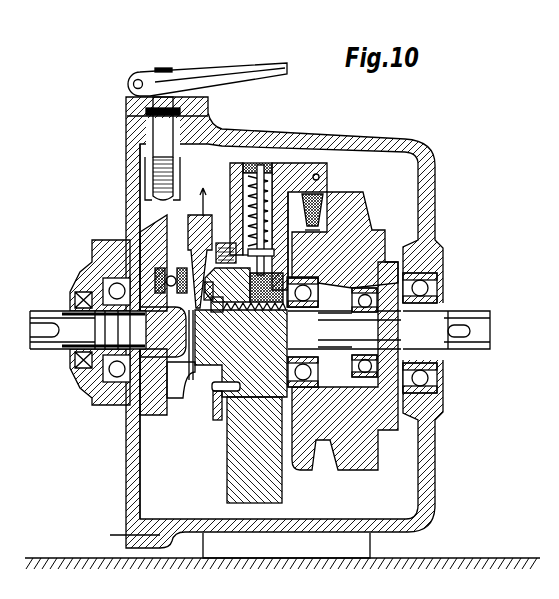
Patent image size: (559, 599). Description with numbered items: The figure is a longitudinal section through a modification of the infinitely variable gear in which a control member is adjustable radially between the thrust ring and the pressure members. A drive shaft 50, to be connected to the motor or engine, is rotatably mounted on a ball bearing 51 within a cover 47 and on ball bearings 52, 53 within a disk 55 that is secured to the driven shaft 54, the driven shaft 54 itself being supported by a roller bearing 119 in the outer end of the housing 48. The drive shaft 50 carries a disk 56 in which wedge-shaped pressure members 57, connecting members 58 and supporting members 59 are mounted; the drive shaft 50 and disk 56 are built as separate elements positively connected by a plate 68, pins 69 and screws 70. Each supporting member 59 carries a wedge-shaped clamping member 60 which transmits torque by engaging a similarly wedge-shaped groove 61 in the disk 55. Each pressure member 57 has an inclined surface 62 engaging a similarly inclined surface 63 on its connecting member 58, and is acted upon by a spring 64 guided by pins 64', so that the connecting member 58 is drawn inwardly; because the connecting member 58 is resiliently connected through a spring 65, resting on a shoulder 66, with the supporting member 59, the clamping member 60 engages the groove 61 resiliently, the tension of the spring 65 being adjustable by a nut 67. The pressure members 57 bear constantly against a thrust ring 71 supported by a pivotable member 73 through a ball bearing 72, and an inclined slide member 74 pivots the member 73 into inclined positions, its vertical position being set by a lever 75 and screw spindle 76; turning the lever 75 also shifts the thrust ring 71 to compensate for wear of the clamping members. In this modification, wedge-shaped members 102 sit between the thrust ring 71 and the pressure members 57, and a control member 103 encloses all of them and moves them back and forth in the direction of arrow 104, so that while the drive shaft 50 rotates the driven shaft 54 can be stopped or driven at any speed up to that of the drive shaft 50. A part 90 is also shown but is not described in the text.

The cover 47 is at (132, 484).
The housing 48 is at (308, 532).
The drive shaft 50 is at (52, 350).
The ball bearing 51 is at (95, 395).
The ball bearing 52 is at (325, 352).
The ball bearing 53 is at (369, 362).
The driven shaft 54 is at (467, 352).
The disk 55 is at (358, 453).
The disk 56 is at (284, 494).
The pressure member 57 is at (244, 285).
The connecting member 58 is at (279, 167).
The supporting member 59 is at (305, 164).
The wedge-shaped member 60 is at (330, 195).
The wedge-shaped groove 61 is at (313, 227).
The inclined surface 62 is at (221, 313).
The inclined surface 63 is at (248, 311).
The spring 64 is at (241, 353).
The pin 64' is at (277, 314).
The spring 65 is at (246, 184).
The shoulder 66 is at (290, 254).
The nut 67 is at (260, 162).
The plate 68 is at (219, 417).
The pin 69 is at (219, 392).
The screw 70 is at (224, 243).
The thrust ring 71 is at (196, 292).
The ball bearing 72 is at (162, 276).
The pivotable member 73 is at (150, 246).
The inclined slide member 74 is at (131, 199).
The lever 75 is at (247, 66).
The screw spindle 76 is at (157, 172).
The bracket 90 is at (191, 377).
The wedge-shaped member 102 is at (192, 347).
The control member 103 is at (193, 205).
The arrow 104 is at (217, 202).
The roller bearing 119 is at (441, 283).